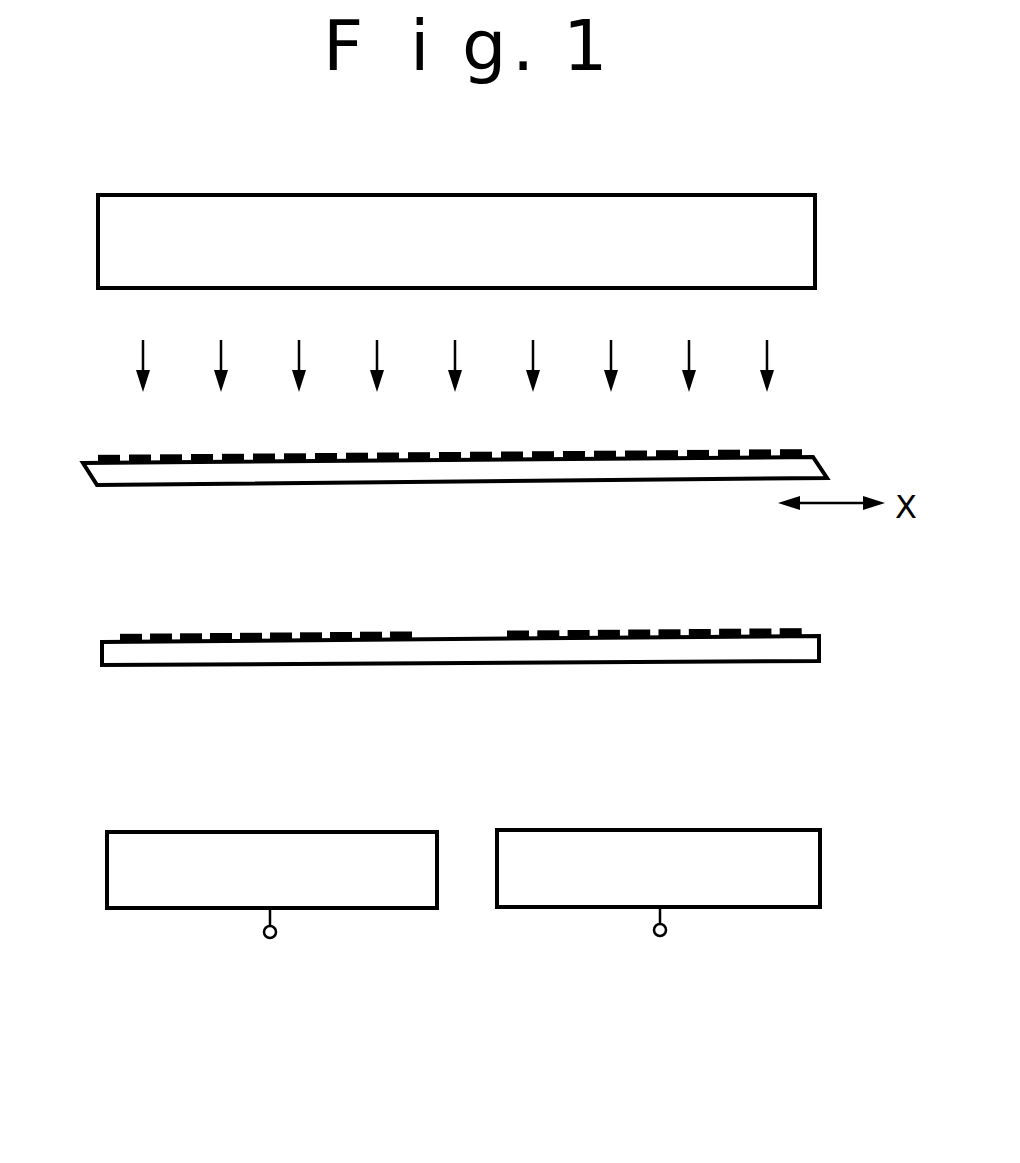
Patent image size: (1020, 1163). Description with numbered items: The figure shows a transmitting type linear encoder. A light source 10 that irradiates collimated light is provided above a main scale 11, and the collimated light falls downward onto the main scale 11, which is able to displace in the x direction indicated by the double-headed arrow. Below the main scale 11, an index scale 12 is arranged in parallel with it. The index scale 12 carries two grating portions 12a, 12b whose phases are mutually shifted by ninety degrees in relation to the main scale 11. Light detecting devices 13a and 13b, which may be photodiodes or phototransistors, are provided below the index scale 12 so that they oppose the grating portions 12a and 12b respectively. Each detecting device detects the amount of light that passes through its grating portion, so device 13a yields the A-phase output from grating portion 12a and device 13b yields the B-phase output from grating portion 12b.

The light source 10 is at (815, 241).
The main scale 11 is at (98, 468).
The index scale 12 is at (112, 657).
The grating portion 12a is at (418, 618).
The grating portion 12b is at (803, 618).
The light detecting device 13a is at (134, 848).
The light detecting device 13b is at (528, 850).